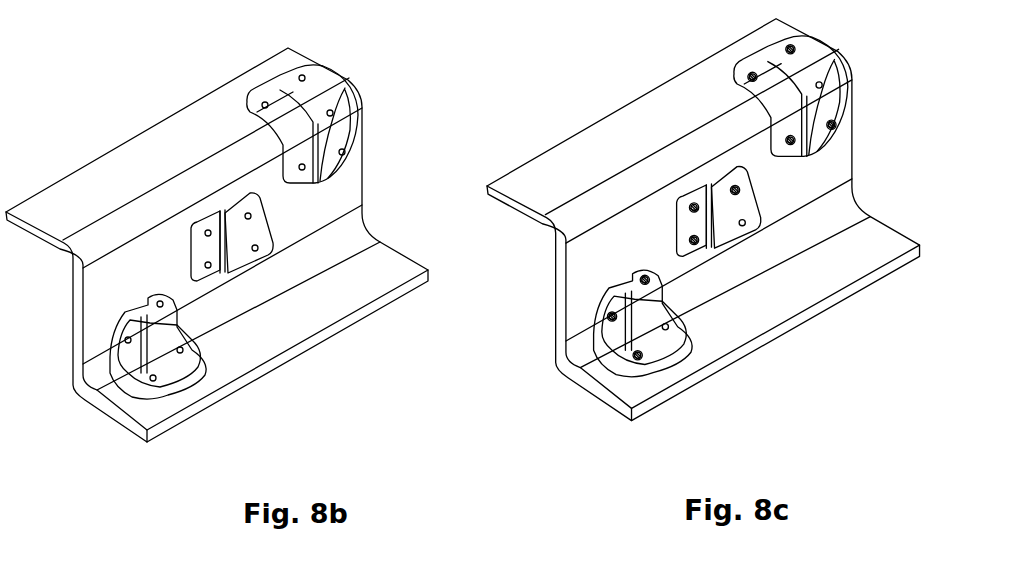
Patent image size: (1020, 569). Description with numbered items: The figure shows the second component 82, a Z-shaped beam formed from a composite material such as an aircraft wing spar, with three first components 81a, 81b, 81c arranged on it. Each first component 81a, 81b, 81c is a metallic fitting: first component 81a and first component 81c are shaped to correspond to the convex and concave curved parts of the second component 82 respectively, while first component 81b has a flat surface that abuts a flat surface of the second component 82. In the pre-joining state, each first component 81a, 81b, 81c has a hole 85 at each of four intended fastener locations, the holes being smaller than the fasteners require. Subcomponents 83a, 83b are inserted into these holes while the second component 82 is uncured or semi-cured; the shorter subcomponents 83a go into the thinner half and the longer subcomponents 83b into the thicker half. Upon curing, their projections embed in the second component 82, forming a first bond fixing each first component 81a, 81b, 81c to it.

In FIG. 8b, the second component 82 is at (160, 168).
In FIG. 8b, the first component 81a is at (332, 88).
In FIG. 8c, the first component 81a is at (815, 57).
In FIG. 8b, the first component 81b is at (243, 255).
In FIG. 8c, the first component 81b is at (733, 239).
In FIG. 8b, the first component 81c is at (133, 368).
In FIG. 8c, the first component 81c is at (612, 352).
In FIG. 8c, the subcomponent 83a is at (647, 277).
In FIG. 8c, the subcomponent 83b is at (792, 46).
In FIG. 8c, the hole 85 is at (703, 210).